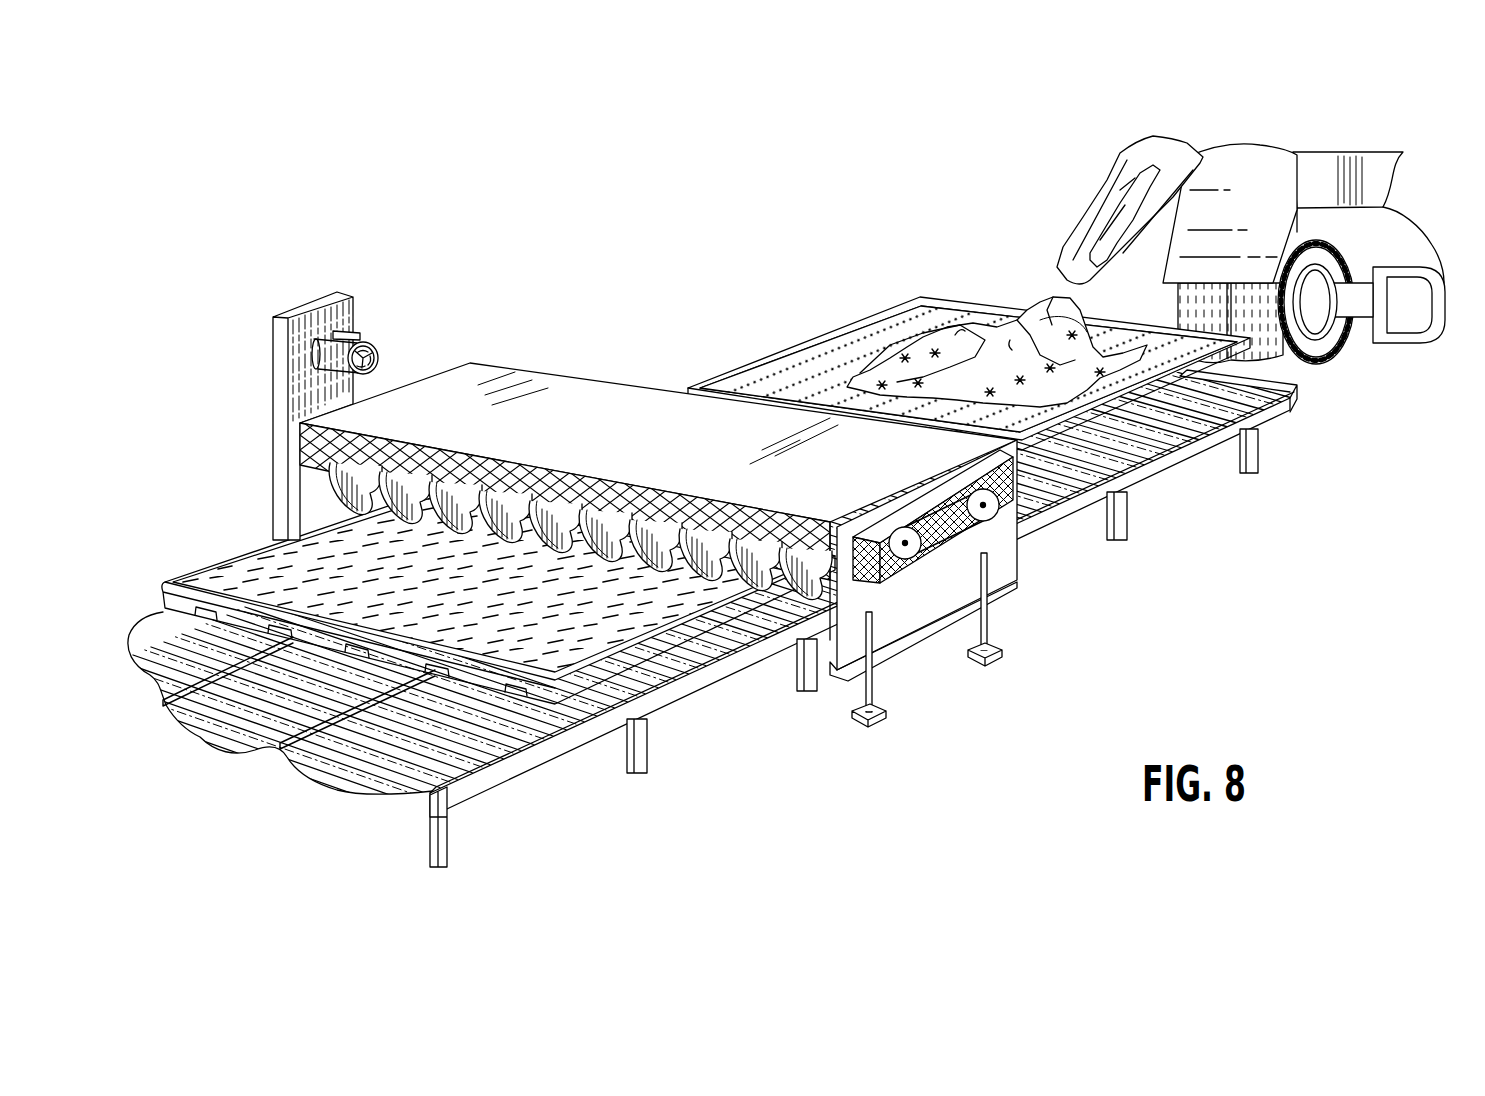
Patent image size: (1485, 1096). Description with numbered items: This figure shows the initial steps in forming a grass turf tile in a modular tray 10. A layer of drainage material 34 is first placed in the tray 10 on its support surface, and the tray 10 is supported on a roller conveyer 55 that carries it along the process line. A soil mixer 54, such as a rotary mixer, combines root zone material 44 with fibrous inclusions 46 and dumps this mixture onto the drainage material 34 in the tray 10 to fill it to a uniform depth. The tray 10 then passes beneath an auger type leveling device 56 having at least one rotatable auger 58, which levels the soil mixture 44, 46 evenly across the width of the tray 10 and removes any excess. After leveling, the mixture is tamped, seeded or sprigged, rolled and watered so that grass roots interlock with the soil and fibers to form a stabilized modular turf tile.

The modular tray 10 is at (805, 336).
The drainage material 34 is at (907, 300).
The root zone material 44 is at (1040, 305).
The fibrous inclusions 46 is at (1080, 325).
The soil mixer 54 is at (1118, 153).
The roller conveyer 55 is at (1302, 387).
The auger type leveling device 56 is at (483, 362).
The rotatable auger 58 is at (765, 568).